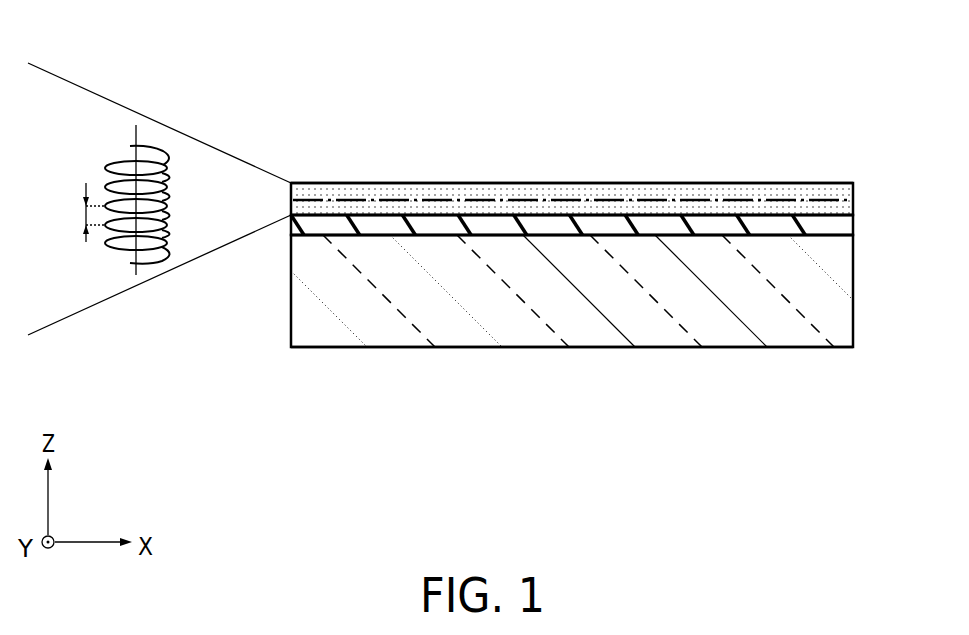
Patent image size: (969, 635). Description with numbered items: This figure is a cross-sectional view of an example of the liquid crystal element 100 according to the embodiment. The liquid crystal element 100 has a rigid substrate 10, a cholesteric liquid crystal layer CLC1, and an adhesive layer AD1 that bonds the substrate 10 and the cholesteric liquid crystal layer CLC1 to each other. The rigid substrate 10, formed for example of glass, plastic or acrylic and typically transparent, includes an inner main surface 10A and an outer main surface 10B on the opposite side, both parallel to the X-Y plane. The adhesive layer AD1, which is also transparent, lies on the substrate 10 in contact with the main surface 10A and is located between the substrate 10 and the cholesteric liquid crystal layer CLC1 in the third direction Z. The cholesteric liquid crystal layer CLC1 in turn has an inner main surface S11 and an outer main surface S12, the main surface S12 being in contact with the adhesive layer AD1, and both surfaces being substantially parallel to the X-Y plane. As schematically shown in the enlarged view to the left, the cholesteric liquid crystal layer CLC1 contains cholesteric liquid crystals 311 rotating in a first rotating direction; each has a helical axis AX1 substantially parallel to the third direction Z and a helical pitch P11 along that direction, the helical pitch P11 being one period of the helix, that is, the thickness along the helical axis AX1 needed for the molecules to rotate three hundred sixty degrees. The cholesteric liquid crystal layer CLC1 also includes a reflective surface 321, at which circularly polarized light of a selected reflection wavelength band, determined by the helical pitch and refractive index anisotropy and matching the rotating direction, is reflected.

The liquid crystal element 100 is at (613, 223).
The rigid substrate 10 is at (597, 269).
The main surface (inner surface) 10A is at (551, 235).
The main surface (outer surface) 10B is at (548, 347).
The adhesive layer AD1 is at (850, 222).
The cholesteric liquid crystal layer CLC1 is at (613, 256).
The main surface (inner surface) S11 is at (437, 183).
The main surface (outer surface) S12 is at (437, 215).
The cholesteric liquid crystals 311 is at (172, 190).
The helical axis AX1 is at (134, 134).
The helical pitch P11 is at (84, 213).
The reflective surface 321 is at (648, 200).